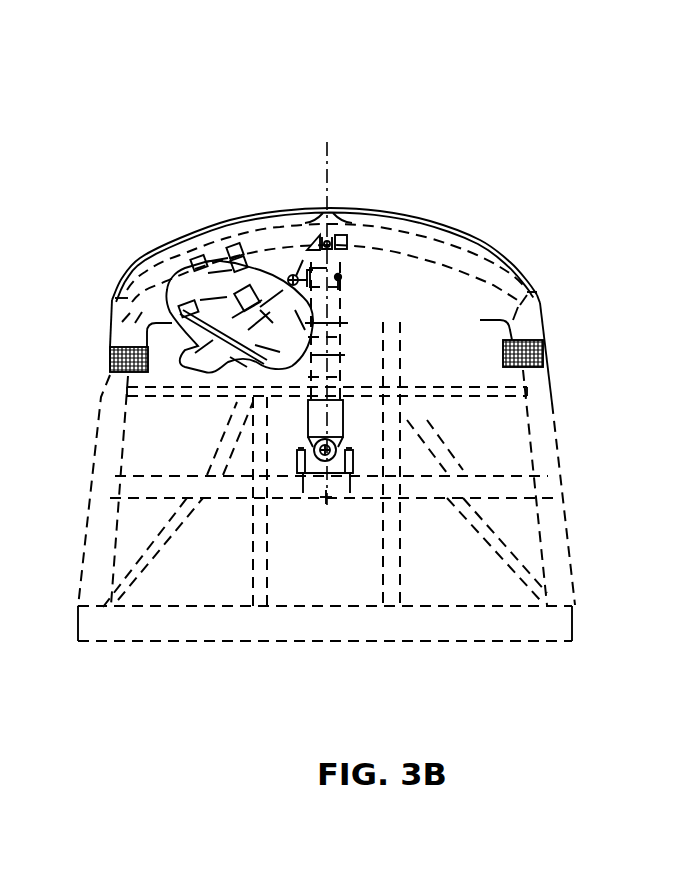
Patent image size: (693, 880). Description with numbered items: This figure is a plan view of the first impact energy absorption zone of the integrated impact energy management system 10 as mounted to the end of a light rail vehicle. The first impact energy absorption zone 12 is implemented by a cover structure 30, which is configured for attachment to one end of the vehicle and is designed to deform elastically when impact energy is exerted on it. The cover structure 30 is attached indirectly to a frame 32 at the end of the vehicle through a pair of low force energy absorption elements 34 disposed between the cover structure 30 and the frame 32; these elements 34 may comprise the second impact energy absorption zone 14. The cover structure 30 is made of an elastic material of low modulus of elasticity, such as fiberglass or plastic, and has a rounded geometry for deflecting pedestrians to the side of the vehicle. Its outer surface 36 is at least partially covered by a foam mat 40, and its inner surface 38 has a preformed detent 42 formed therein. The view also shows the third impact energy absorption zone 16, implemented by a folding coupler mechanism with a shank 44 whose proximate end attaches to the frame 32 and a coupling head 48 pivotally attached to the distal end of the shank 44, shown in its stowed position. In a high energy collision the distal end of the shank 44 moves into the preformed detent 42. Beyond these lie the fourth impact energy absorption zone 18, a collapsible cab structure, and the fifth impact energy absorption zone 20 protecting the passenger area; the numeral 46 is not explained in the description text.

The integrated impact energy management system 10 is at (525, 96).
The first impact energy absorption zone 12 is at (542, 219).
The second impact energy absorption zone 14 is at (80, 334).
The third impact energy absorption zone 16 is at (368, 358).
The fourth impact energy absorption zone 18 is at (574, 418).
The fifth impact energy absorption zone 20 is at (14, 479).
The cover structure 30 is at (155, 200).
The frame 32 is at (549, 477).
The low force energy absorption elements 34 is at (543, 357).
The outer surface 36 is at (428, 204).
The inner surface 38 is at (418, 257).
The foam mat 40 is at (273, 213).
The preformed detent 42 is at (333, 212).
The shank 44 is at (343, 406).
The attachment point 46 is at (338, 277).
The coupling head 48 is at (227, 380).